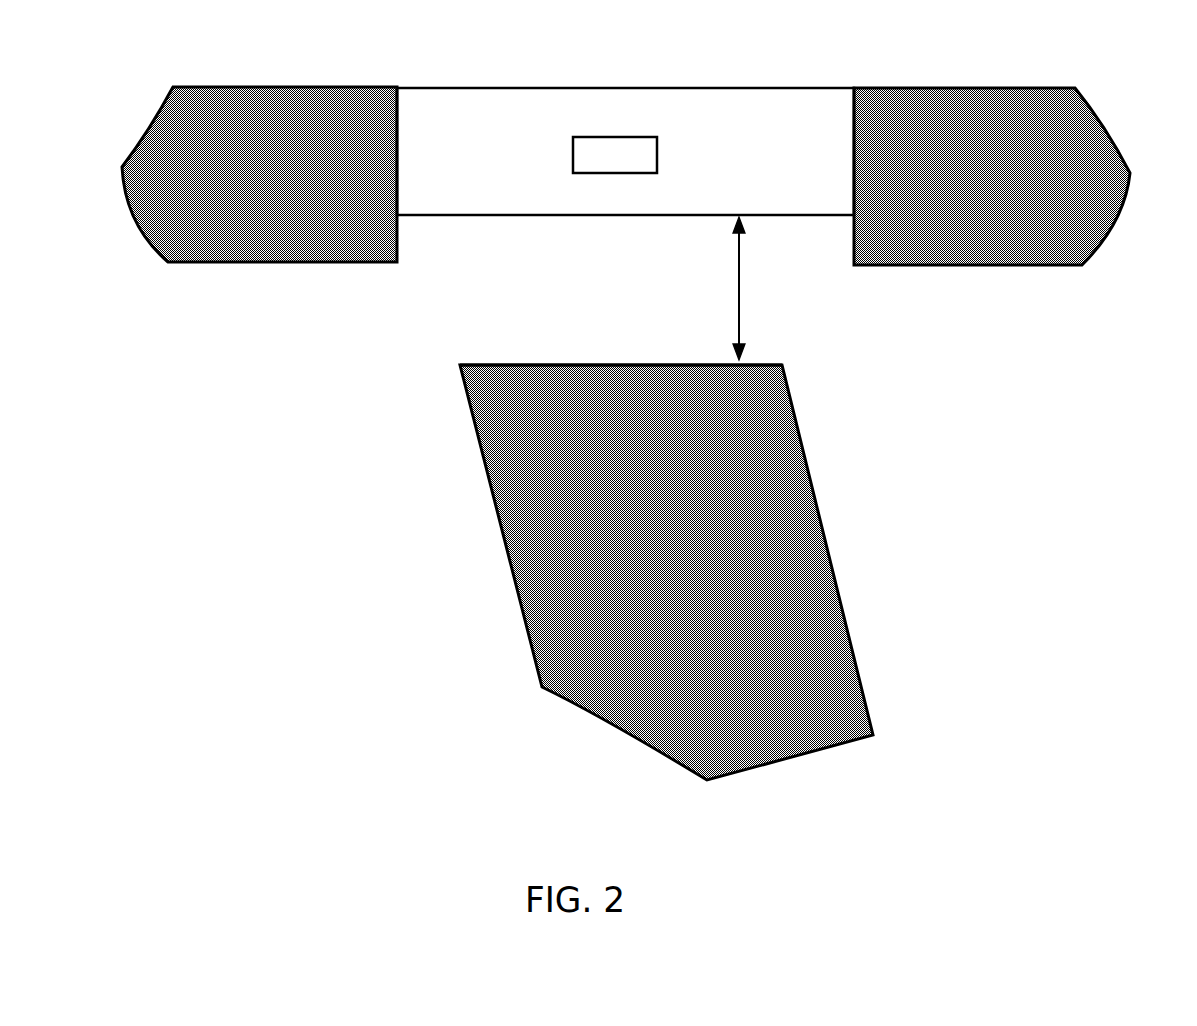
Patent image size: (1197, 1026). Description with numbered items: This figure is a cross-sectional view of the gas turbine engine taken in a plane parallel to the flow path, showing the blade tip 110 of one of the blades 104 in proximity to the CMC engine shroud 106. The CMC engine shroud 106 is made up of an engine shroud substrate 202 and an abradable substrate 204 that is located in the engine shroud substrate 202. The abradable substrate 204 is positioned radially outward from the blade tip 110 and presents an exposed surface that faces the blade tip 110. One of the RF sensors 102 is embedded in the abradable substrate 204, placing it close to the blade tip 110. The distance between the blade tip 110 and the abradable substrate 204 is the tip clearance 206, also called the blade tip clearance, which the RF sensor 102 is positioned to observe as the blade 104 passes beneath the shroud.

The RF sensor 102 is at (632, 147).
The blade 104 is at (797, 418).
The CMC engine shroud 106 is at (948, 275).
The blade tip 110 is at (485, 363).
The engine shroud substrate 202 is at (272, 82).
The abradable substrate 204 is at (440, 88).
The tip clearance 206 is at (742, 310).